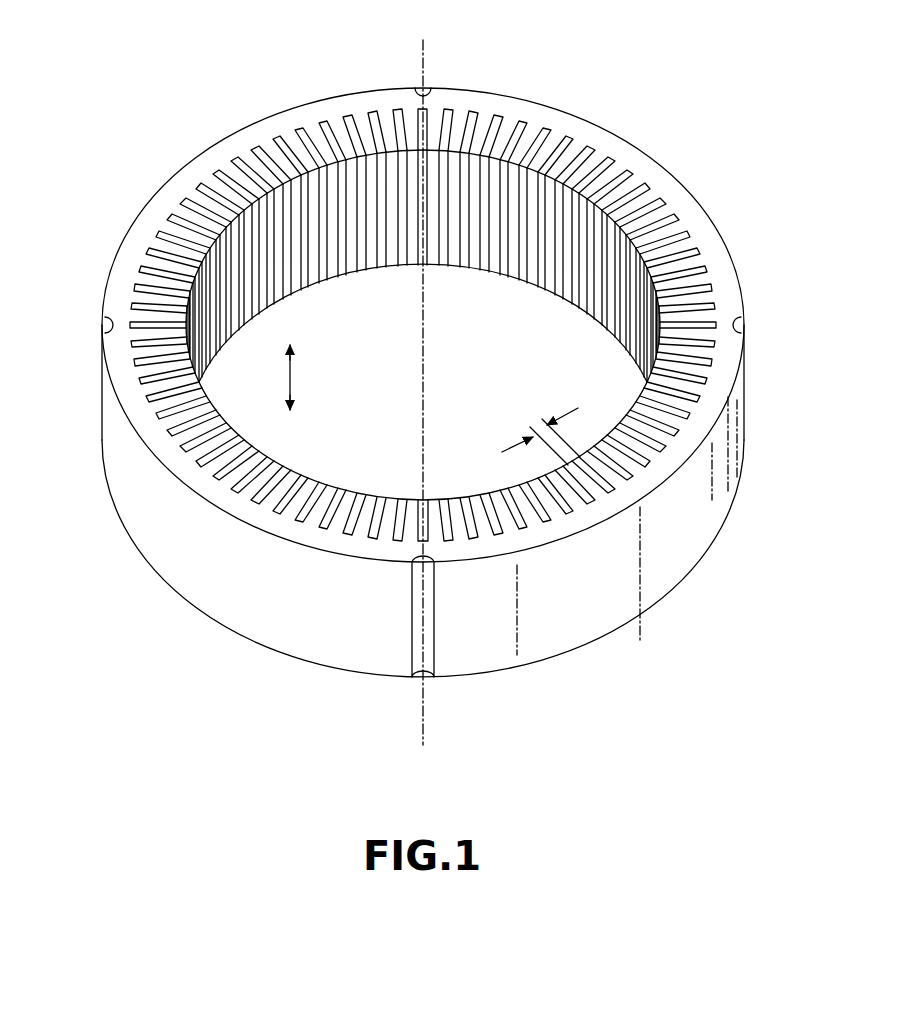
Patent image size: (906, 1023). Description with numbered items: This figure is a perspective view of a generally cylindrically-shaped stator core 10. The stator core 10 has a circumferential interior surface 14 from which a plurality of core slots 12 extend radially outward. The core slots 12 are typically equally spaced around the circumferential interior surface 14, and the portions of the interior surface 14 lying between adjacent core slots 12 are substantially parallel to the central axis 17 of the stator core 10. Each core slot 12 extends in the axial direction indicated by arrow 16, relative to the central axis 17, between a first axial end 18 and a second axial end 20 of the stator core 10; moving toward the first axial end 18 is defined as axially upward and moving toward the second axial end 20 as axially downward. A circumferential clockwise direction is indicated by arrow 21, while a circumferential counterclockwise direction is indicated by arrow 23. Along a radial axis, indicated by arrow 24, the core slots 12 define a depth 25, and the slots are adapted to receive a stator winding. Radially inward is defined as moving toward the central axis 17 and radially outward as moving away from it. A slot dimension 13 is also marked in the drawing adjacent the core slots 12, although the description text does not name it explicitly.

The stator core 10 is at (122, 100).
The core slots 12 is at (128, 246).
The slot width 13 is at (562, 412).
The circumferential interior surface 14 is at (468, 268).
The arrow 16 is at (300, 375).
The central axis 17 is at (424, 711).
The first axial end 18 is at (596, 134).
The second axial end 20 is at (640, 622).
The arrow 21 is at (346, 76).
The arrow 23 is at (222, 112).
The arrow 24 is at (652, 134).
The depth 25 is at (165, 360).